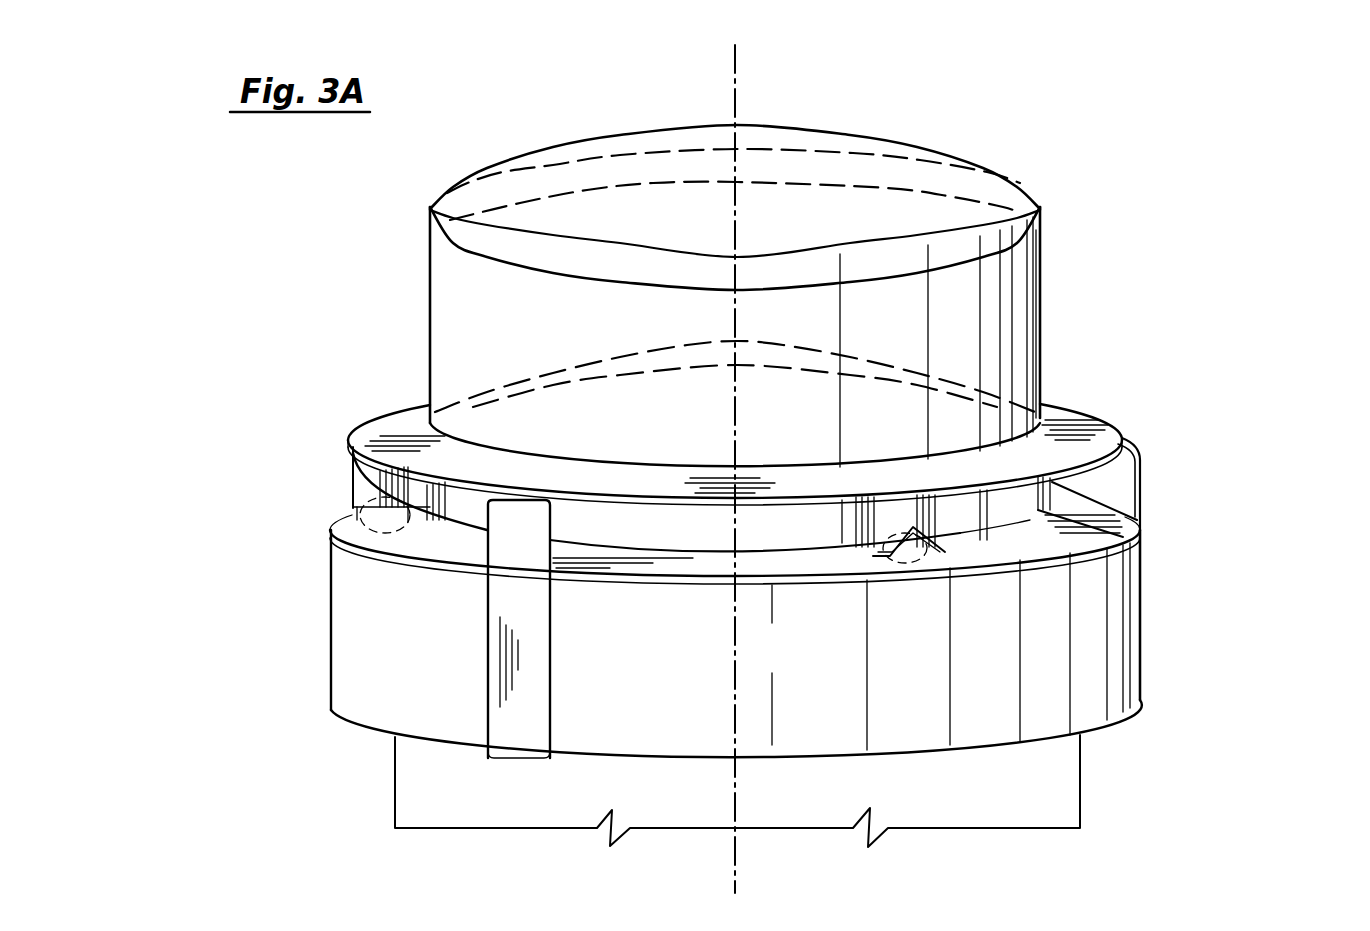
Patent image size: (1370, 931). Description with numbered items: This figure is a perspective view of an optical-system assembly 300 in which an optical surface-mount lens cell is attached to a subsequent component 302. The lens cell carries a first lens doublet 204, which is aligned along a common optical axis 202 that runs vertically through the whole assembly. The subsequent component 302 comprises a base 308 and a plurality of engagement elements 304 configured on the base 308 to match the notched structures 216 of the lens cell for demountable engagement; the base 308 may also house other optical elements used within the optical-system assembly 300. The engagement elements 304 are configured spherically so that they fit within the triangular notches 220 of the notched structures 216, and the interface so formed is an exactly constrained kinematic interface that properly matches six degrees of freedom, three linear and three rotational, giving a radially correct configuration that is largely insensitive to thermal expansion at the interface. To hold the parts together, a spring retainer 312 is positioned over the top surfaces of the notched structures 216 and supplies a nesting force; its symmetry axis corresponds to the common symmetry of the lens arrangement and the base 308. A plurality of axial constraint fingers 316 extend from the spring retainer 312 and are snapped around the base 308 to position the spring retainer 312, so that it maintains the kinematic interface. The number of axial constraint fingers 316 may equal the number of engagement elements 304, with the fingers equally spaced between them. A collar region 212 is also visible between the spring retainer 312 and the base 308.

The common optical axis 202 is at (737, 90).
The first lens doublet 204 is at (972, 193).
The optical-system assembly 300 is at (1107, 327).
The spring retainer 312 is at (1090, 435).
The collar / support ring 212 is at (1013, 500).
The notched structures 216 is at (367, 485).
The engagement elements 304 is at (382, 517).
The triangular notches 220 is at (900, 527).
The base 308 is at (1095, 680).
The subsequent component 302 is at (1180, 568).
The axial constraint fingers 316 is at (1140, 485).